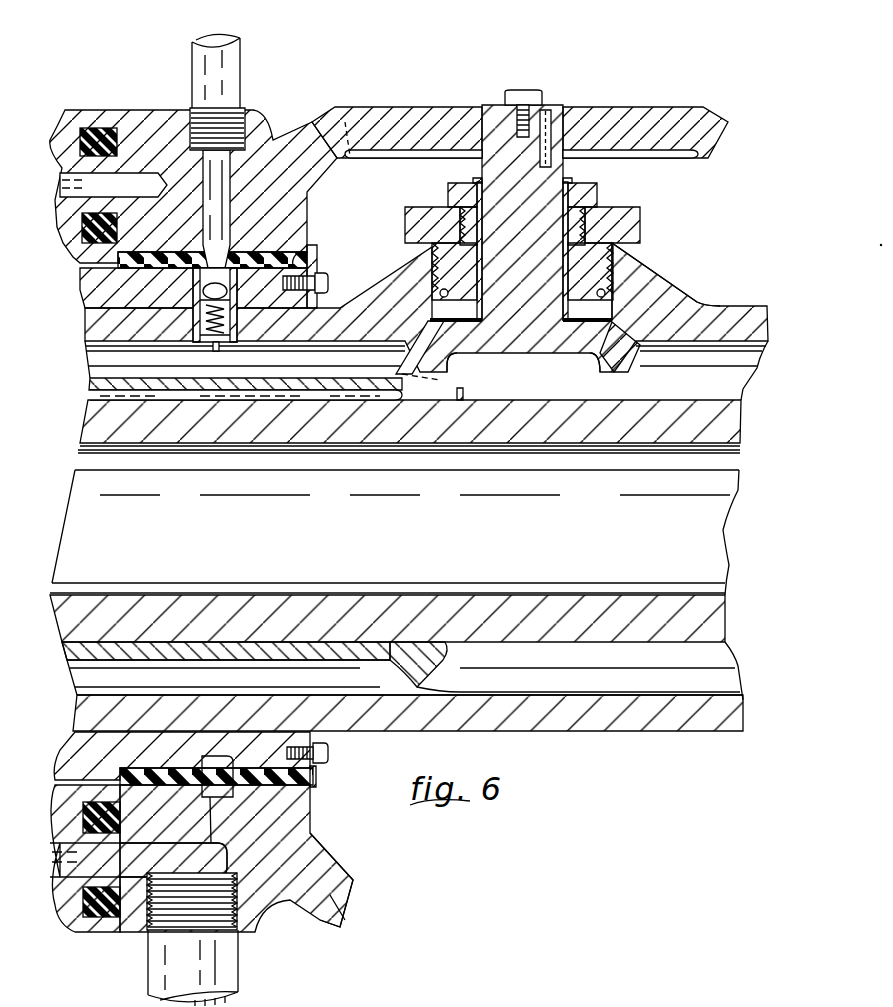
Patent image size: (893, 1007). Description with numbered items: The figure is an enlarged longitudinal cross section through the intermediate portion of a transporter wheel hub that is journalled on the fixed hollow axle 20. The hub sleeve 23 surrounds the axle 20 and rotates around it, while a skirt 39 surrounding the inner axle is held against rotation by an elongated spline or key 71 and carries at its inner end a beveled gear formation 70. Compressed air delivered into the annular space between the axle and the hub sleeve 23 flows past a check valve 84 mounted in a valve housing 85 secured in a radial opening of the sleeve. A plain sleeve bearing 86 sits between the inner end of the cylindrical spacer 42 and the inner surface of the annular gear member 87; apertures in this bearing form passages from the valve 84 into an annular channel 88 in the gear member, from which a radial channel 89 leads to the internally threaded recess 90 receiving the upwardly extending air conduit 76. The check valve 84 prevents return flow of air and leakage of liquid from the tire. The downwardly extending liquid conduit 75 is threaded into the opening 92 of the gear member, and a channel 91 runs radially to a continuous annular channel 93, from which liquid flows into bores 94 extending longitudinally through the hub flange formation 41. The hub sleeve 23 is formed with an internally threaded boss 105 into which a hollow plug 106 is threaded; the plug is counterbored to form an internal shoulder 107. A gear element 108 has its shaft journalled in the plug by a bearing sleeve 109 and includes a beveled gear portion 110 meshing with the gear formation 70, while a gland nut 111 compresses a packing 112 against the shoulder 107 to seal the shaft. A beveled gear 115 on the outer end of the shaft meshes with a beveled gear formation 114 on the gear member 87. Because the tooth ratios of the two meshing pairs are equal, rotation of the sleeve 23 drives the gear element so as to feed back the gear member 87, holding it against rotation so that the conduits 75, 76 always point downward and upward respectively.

The axle 20 is at (380, 452).
The hub sleeve 23 is at (715, 305).
The skirt 39 is at (232, 665).
The hub flange formation 41 is at (76, 110).
The cylindrical spacer 42 is at (75, 755).
The beveled gear formation 70 is at (440, 388).
The spline or key 71 is at (277, 400).
The liquid conduit 75 is at (238, 995).
The air conduit 76 is at (192, 86).
The check valve 84 is at (217, 350).
The valve housing 85 is at (238, 293).
The sleeve bearing 86 is at (307, 248).
The gear member 87 is at (290, 840).
The annular channel 88 is at (196, 278).
The radial channel 89 is at (203, 186).
The screw threaded recess 90 is at (246, 120).
The channel 91 is at (100, 860).
The screw threaded opening 92 is at (150, 930).
The annular channel 93 is at (66, 200).
The bore 94 is at (58, 185).
The boss 105 is at (660, 285).
The hollow plug 106 is at (640, 216).
The annular shoulder 107 is at (612, 250).
The gear element 108 is at (540, 355).
The bearing sleeve 109 is at (588, 195).
The beveled gear portion 110 is at (602, 362).
The gland nut 111 is at (448, 186).
The packing 112 is at (432, 255).
The beveled gear formation 114 is at (320, 896).
The beveled gear 115 is at (600, 128).